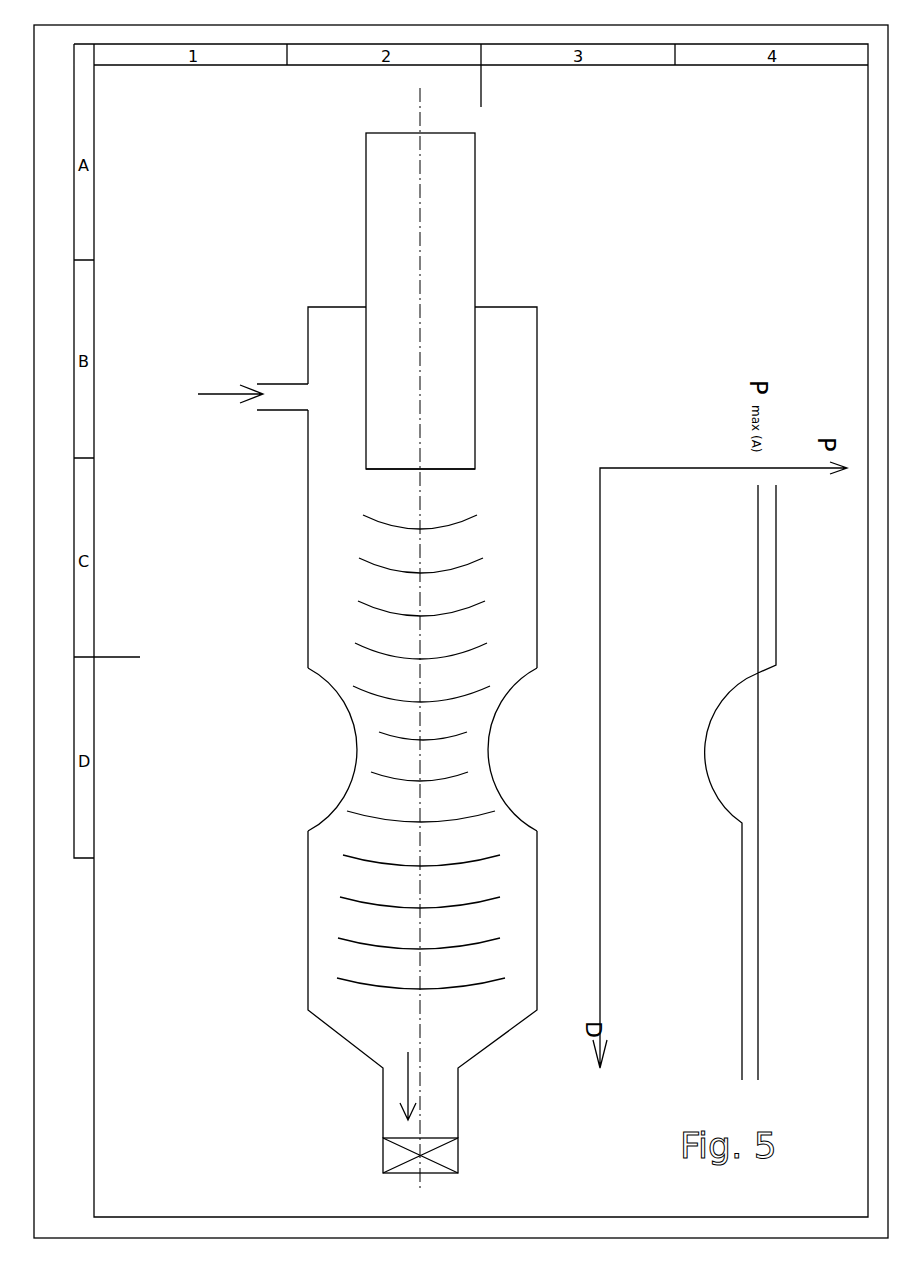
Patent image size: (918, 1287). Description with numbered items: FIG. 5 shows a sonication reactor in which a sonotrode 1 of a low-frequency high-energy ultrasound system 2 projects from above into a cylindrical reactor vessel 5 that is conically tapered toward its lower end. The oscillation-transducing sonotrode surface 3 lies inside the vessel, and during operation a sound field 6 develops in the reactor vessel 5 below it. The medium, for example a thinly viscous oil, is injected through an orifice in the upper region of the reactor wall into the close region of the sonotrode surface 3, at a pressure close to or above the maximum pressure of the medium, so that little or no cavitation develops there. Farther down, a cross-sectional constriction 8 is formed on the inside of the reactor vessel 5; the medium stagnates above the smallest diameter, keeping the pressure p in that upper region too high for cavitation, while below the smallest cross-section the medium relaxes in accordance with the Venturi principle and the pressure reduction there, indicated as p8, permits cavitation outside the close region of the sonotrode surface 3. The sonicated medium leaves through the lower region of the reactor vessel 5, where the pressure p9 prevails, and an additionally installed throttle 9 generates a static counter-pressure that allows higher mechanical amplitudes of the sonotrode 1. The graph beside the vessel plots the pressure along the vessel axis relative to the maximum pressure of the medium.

The sonotrode 1 is at (475, 272).
The low-frequency high-energy ultrasound system 2 is at (274, 384).
The sonotrode surface 3 is at (395, 468).
The reactor vessel 5 is at (537, 410).
The sound field 6 is at (397, 586).
The cross-sectional constriction 8 is at (348, 789).
The throttle 9 is at (458, 1156).
The pressure at constriction p8 is at (397, 753).
The pressure at outlet p9 is at (397, 1010).